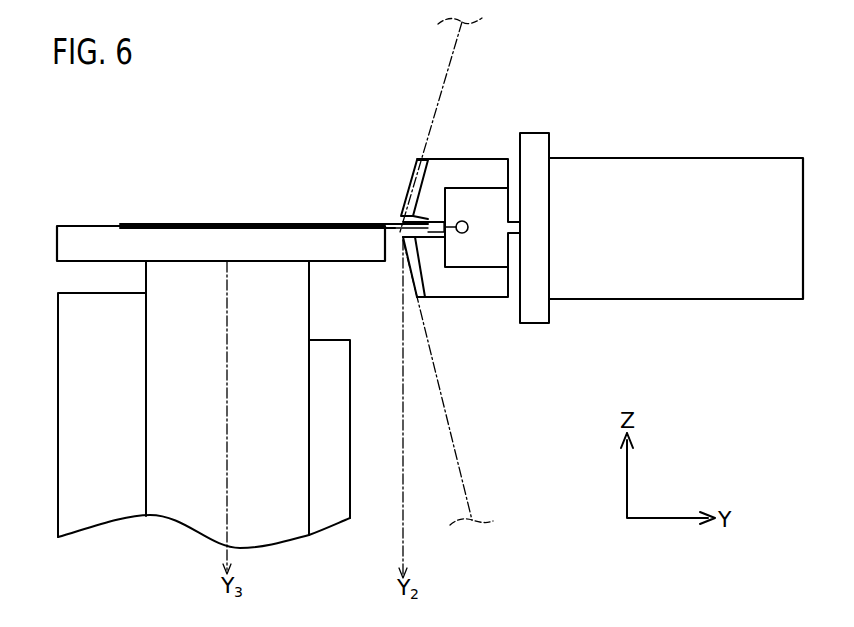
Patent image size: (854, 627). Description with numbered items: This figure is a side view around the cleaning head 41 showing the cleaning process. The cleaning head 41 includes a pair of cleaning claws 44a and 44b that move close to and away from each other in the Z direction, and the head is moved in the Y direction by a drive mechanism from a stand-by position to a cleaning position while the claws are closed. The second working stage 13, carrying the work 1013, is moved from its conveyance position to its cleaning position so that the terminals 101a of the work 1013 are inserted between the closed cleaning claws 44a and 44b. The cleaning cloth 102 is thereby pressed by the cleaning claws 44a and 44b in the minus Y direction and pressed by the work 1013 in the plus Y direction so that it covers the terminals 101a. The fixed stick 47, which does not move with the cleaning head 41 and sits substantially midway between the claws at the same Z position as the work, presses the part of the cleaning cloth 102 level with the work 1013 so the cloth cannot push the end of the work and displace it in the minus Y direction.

The second working stage 13 is at (73, 226).
The work 1013 is at (207, 223).
The terminals 101a is at (392, 225).
The cleaning cloth 102 is at (445, 72).
The cleaning head 41 is at (677, 158).
The cleaning claw 44a is at (462, 159).
The cleaning claw 44b is at (432, 297).
The fixed stick 47 is at (463, 233).